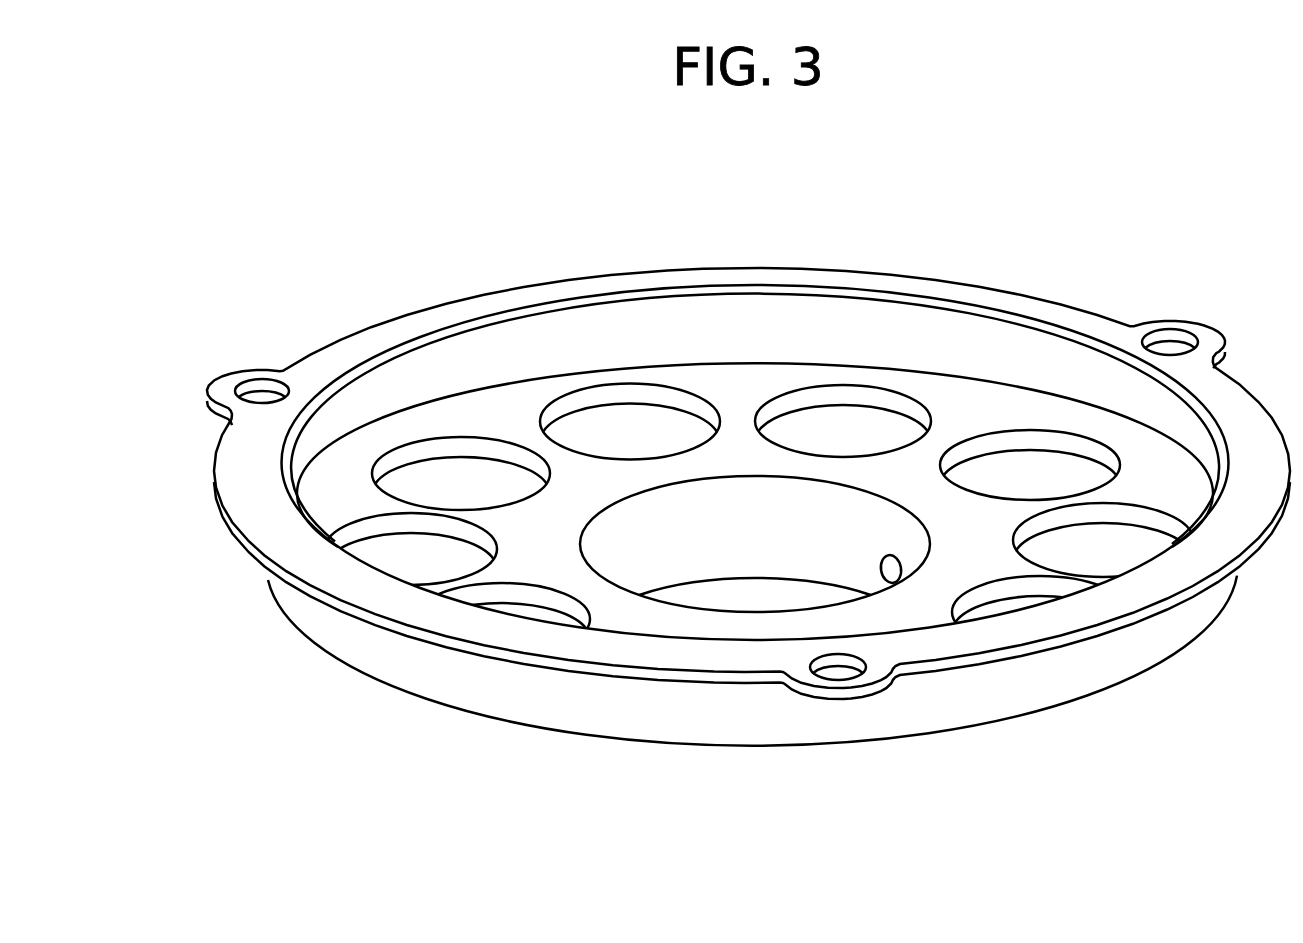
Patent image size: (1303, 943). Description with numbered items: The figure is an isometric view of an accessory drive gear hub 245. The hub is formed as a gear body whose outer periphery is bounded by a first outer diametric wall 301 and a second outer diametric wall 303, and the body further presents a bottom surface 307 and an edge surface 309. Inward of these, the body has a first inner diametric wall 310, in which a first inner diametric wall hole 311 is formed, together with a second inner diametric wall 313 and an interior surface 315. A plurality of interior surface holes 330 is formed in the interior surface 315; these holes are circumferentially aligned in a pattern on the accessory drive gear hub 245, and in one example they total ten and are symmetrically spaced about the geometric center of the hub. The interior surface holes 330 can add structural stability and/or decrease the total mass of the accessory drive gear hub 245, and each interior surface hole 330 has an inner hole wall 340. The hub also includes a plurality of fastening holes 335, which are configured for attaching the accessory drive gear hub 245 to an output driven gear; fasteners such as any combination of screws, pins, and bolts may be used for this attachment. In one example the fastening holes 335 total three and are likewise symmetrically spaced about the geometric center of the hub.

The accessory drive gear hub 245 is at (1205, 162).
The first outer diametric wall 301 is at (1127, 623).
The second outer diametric wall 303 is at (1017, 688).
The bottom surface 307 is at (805, 277).
The edge surface 309 is at (718, 290).
The first inner diametric wall 310 is at (633, 555).
The first inner diametric wall hole 311 is at (850, 582).
The second inner diametric wall 313 is at (615, 338).
The interior surface 315 is at (510, 410).
The interior surface holes 330 is at (470, 396).
The fastening holes 335 is at (258, 322).
The inner hole wall 340 is at (425, 445).